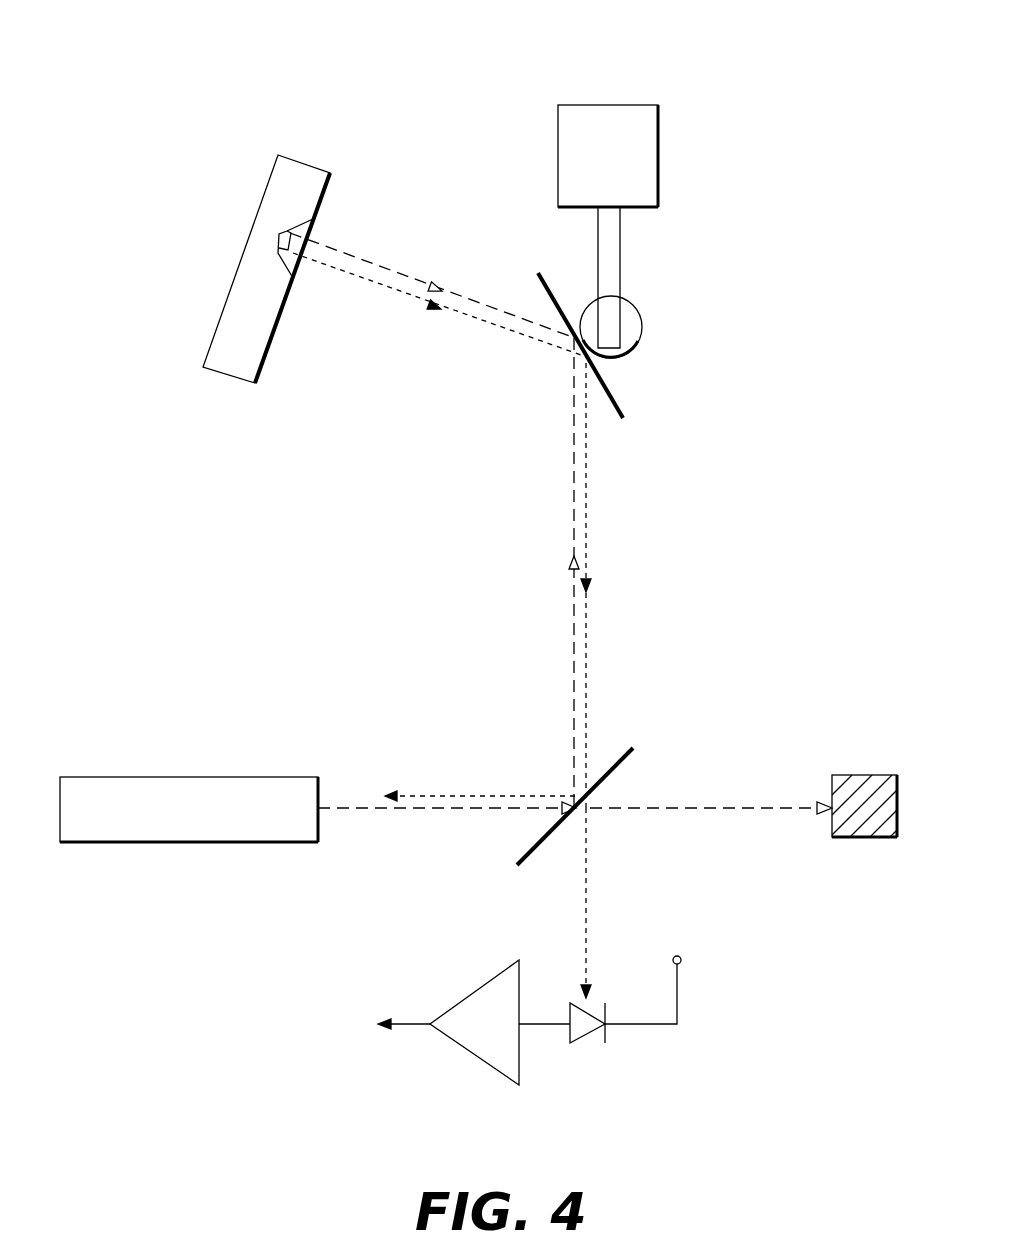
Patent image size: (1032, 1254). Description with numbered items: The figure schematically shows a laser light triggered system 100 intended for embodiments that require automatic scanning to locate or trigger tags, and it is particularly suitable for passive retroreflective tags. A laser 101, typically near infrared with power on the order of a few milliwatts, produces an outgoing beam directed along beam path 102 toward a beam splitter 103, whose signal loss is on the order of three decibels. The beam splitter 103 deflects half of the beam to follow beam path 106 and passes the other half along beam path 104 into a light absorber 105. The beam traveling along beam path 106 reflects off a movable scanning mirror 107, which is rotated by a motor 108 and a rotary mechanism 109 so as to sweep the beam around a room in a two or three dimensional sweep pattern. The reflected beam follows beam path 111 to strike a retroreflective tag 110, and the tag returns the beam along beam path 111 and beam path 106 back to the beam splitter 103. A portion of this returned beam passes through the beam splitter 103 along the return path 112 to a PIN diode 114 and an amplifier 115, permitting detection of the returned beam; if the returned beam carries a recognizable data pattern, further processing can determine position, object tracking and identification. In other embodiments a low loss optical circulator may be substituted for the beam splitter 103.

The laser light triggered system 100 is at (726, 56).
The laser 101 is at (213, 822).
The beam path 102 is at (462, 810).
The beam splitter 103 is at (533, 852).
The beam path 104 is at (745, 808).
The light absorber 105 is at (862, 775).
The beam path 106 is at (572, 466).
The movable scanning mirror 107 is at (615, 400).
The motor 108 is at (633, 169).
The rotary mechanism 109 is at (632, 303).
The retroreflective tag 110 is at (230, 290).
The beam path 111 is at (468, 319).
The return beam 112 is at (498, 793).
The PIN diode 114 is at (590, 1058).
The amplifier 115 is at (507, 1037).